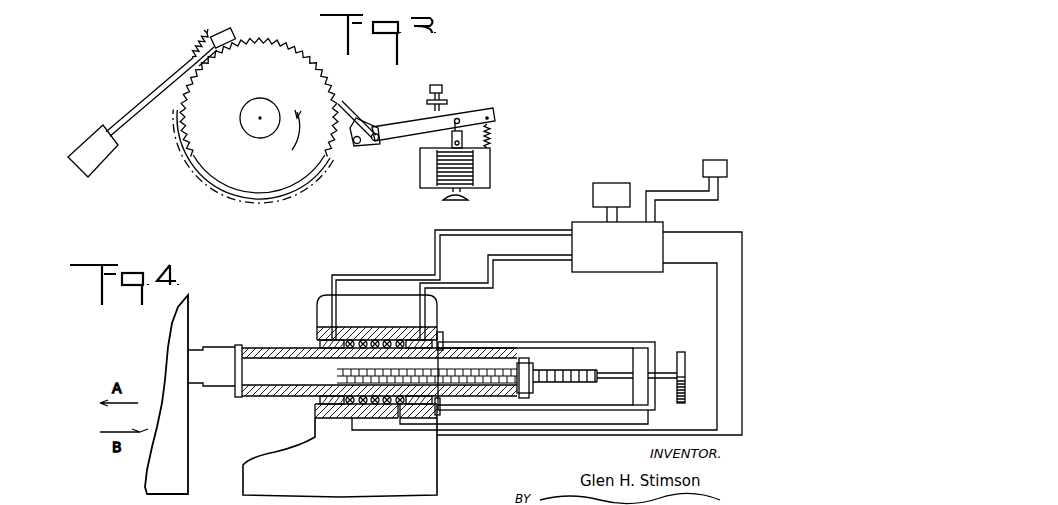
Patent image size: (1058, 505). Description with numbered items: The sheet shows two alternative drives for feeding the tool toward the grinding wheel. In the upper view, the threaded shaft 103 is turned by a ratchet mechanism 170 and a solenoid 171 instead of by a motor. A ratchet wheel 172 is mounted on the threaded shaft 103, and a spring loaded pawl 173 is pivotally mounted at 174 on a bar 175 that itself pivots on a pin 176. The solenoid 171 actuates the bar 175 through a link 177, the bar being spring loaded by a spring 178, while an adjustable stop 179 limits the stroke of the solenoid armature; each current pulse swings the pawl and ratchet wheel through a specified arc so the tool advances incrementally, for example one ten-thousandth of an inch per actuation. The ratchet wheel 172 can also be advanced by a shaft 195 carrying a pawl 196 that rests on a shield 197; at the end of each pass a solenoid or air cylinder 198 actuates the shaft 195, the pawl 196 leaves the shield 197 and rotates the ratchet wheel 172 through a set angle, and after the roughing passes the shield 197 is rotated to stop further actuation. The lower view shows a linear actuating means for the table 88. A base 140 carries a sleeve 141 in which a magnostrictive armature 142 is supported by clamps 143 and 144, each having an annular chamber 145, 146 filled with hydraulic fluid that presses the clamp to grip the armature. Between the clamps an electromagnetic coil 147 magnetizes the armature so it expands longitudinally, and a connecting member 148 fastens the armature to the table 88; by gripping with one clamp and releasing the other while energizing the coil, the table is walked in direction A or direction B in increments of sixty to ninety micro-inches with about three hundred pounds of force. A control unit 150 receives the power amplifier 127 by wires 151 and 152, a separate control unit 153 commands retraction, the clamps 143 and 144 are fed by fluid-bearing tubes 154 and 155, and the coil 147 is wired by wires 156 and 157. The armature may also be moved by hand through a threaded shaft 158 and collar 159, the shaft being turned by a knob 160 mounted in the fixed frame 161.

In FIG. 4, the table 88 is at (180, 343).
In FIG. 3, the threaded shaft 103 is at (243, 120).
In FIG. 4, the power amplifier 127 is at (723, 168).
In FIG. 4, the base 140 is at (445, 453).
In FIG. 4, the sleeve 141 is at (437, 332).
In FIG. 4, the magnostrictive armature 142 is at (259, 348).
In FIG. 4, the clamp 143 is at (318, 340).
In FIG. 4, the clamp 144 is at (443, 341).
In FIG. 4, the annular chamber 145 is at (341, 329).
In FIG. 4, the annular chamber 146 is at (409, 329).
In FIG. 4, the electromagnetic coil 147 is at (352, 420).
In FIG. 4, the connecting member 148 is at (206, 348).
In FIG. 4, the control unit 150 is at (575, 222).
In FIG. 4, the wire 151 is at (707, 178).
In FIG. 4, the wire 152 is at (725, 196).
In FIG. 4, the separate control unit 153 is at (627, 191).
In FIG. 4, the fluid-bearing tube 154 is at (460, 232).
In FIG. 4, the fluid-bearing tube 155 is at (531, 247).
In FIG. 4, the wire 156 is at (700, 249).
In FIG. 4, the wire 157 is at (738, 232).
In FIG. 4, the threaded shaft 158 is at (571, 370).
In FIG. 4, the collar 159 is at (527, 361).
In FIG. 4, the knob 160 is at (680, 350).
In FIG. 4, the fixed frame 161 is at (612, 345).
In FIG. 3, the ratchet mechanism 170 is at (357, 111).
In FIG. 3, the solenoid 171 is at (490, 184).
In FIG. 3, the ratchet wheel 172 is at (320, 83).
In FIG. 3, the spring loaded pawl 173 is at (365, 130).
In FIG. 3, the pivot 174 is at (377, 142).
In FIG. 3, the bar 175 is at (485, 108).
In FIG. 3, the pin 176 is at (356, 145).
In FIG. 3, the link 177 is at (488, 145).
In FIG. 3, the spring 178 is at (490, 134).
In FIG. 3, the adjustable stop 179 is at (444, 95).
In FIG. 3, the shaft 195 is at (146, 94).
In FIG. 3, the pawl 196 is at (188, 56).
In FIG. 3, the shield 197 is at (216, 56).
In FIG. 3, the solenoid or air cylinder 198 is at (90, 147).